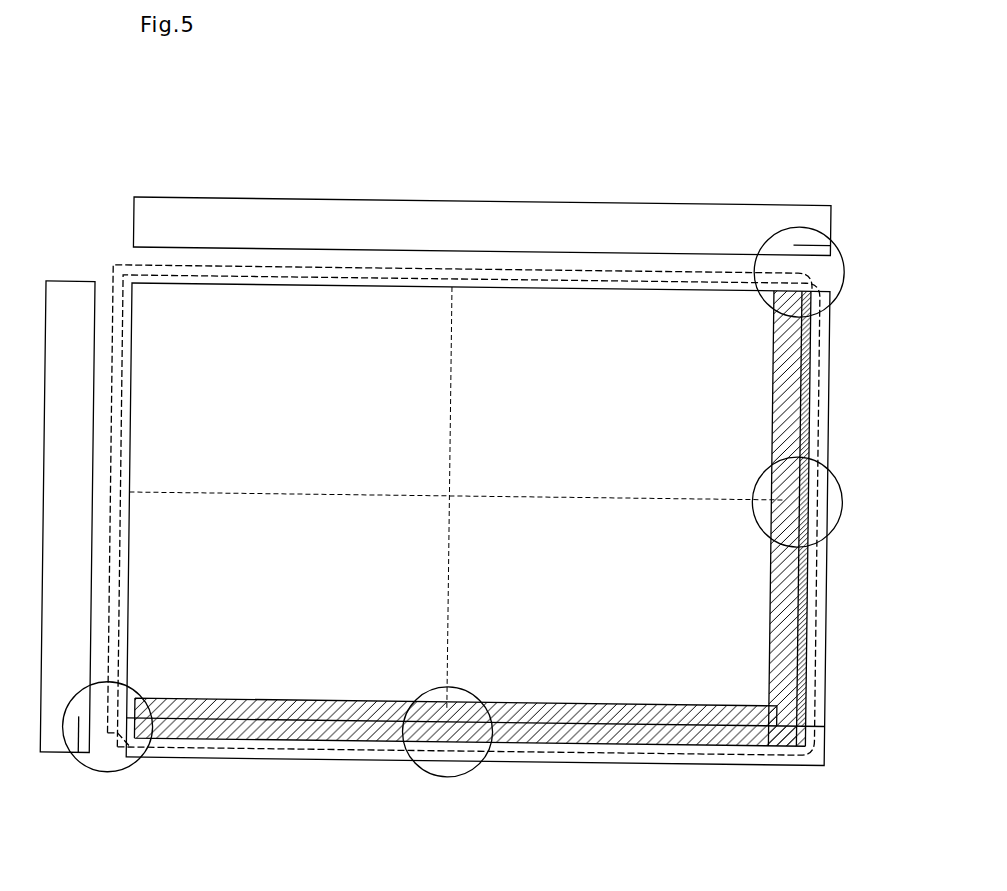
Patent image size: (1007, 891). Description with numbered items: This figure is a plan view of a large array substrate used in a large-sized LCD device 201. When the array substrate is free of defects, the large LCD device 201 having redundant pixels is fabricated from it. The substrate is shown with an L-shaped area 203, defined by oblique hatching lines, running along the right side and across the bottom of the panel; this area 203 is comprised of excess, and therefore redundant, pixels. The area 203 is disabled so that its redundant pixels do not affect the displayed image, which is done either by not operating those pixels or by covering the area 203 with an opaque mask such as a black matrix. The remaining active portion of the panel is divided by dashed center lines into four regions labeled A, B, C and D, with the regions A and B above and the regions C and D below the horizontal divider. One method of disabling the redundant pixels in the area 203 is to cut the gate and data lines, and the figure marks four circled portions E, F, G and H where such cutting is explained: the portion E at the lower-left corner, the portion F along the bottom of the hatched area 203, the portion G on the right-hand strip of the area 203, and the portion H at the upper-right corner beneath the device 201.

The large LCD device 201 is at (514, 195).
The area of redundant pixels 203 is at (812, 342).
The display region A is at (277, 381).
The display region B is at (617, 387).
The display region C is at (274, 605).
The display region D is at (616, 610).
The portion E is at (132, 772).
The portion F is at (469, 773).
The portion G is at (841, 496).
The portion H is at (840, 253).